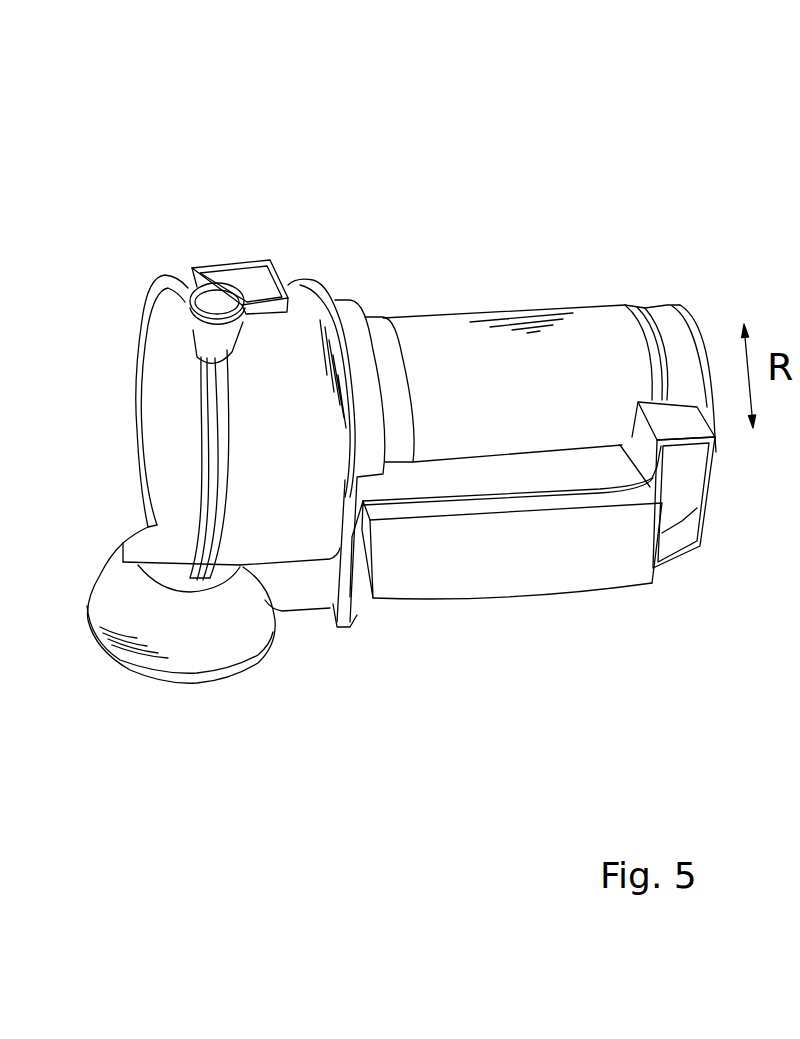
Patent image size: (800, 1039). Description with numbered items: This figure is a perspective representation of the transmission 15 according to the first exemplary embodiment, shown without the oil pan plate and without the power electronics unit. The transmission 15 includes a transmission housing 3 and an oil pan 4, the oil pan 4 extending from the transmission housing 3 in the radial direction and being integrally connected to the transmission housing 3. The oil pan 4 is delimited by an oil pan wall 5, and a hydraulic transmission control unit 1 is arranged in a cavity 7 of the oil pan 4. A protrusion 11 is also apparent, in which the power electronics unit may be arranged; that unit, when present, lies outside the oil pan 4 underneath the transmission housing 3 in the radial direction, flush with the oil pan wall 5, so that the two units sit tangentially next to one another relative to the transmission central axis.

The hydraulic transmission control unit 1 is at (412, 568).
The transmission housing 3 is at (592, 355).
The oil pan 4 is at (534, 617).
The oil pan wall 5 is at (697, 510).
The cavity 7 is at (673, 540).
The protrusion 11 is at (491, 475).
The transmission 15 is at (322, 215).